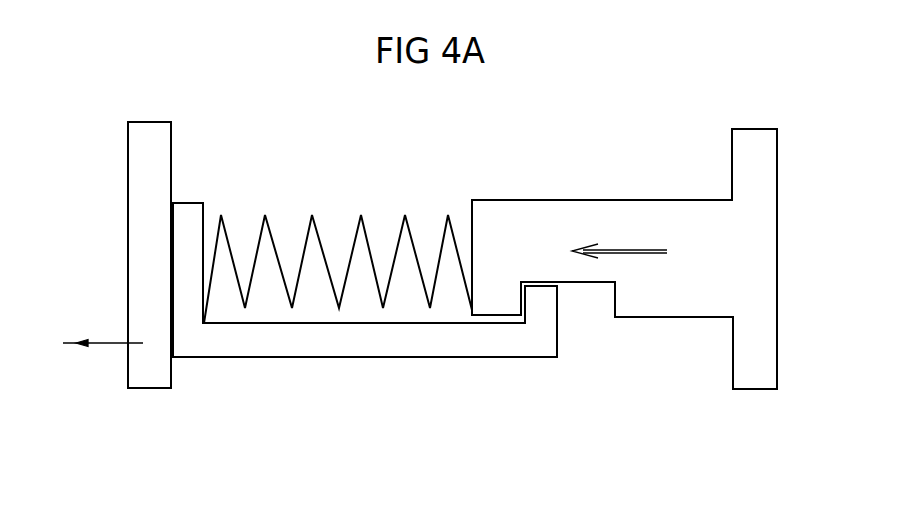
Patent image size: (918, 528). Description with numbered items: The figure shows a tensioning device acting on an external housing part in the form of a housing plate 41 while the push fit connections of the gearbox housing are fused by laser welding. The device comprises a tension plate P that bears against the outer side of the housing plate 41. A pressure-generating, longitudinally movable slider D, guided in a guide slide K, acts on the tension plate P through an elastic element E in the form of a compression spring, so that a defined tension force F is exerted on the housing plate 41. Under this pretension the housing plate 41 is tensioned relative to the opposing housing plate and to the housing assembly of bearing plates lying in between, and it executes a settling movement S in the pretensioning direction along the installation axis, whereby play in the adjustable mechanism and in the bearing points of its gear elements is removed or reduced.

The housing plate 41 is at (160, 152).
The tension plate P is at (192, 222).
The elastic element E is at (363, 222).
The slider D is at (664, 227).
The tension force F is at (619, 240).
The guide slide K is at (490, 345).
The settling movement S is at (103, 332).